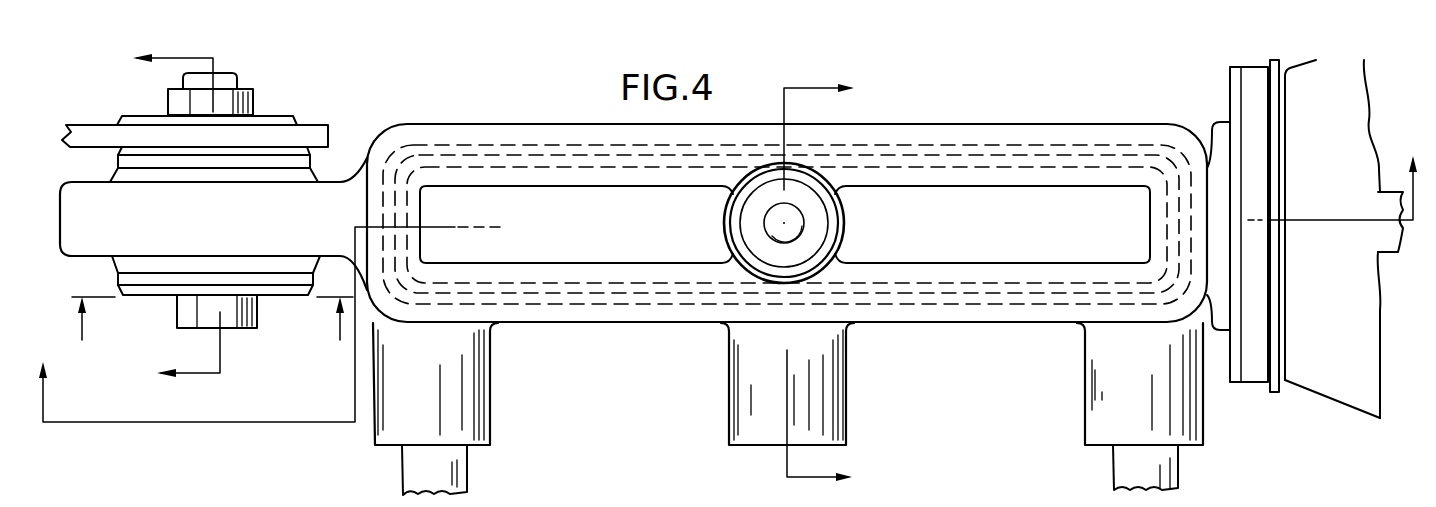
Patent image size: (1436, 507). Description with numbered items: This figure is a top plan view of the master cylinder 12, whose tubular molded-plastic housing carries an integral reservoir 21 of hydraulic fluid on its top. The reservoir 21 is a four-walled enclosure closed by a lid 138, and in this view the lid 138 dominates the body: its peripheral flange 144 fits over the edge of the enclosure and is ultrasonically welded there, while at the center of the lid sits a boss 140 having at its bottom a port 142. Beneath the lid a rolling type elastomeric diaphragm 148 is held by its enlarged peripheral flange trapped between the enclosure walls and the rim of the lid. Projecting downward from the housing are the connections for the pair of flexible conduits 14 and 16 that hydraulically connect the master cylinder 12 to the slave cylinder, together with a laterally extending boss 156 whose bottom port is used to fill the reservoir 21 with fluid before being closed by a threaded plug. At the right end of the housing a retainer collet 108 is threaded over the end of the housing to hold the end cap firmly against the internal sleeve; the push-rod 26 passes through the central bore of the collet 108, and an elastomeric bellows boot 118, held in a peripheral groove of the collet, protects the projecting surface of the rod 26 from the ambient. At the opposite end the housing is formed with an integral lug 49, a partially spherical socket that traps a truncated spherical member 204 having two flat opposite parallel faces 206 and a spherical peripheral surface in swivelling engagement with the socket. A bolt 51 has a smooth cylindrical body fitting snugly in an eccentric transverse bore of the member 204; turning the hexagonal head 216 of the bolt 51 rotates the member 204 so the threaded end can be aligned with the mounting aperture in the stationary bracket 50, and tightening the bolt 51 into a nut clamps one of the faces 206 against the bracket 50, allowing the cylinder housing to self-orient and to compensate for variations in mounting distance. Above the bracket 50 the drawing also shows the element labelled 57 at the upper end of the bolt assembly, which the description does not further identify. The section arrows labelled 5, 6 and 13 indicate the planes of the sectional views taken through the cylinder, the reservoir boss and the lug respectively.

The master cylinder 12 is at (552, 325).
The reservoir 21 is at (1016, 326).
The lid 138 is at (614, 252).
The peripheral flange 144 is at (528, 268).
The boss 140 is at (748, 222).
The port 142 is at (800, 231).
The rolling type elastomeric diaphragm 148 is at (795, 218).
The section line 6- 6 is at (831, 286).
The laterally extending boss 156 is at (840, 376).
The flexible conduit 14 is at (462, 468).
The flexible conduit 16 is at (1178, 462).
The retainer collet 108 is at (1255, 378).
The elastomeric bellows boot 118 is at (1357, 392).
The push-rod 26 is at (1390, 255).
The section line 5- 5 is at (723, 274).
The lug 49 is at (78, 255).
The bracket 50 is at (110, 124).
The flat end faces 206 is at (278, 150).
The truncated spherical member 204 is at (156, 277).
The bolt nut 57 is at (245, 77).
The hexagonal head 216 is at (213, 312).
The bolt 51 is at (245, 330).
The section line 13- 13 is at (210, 337).